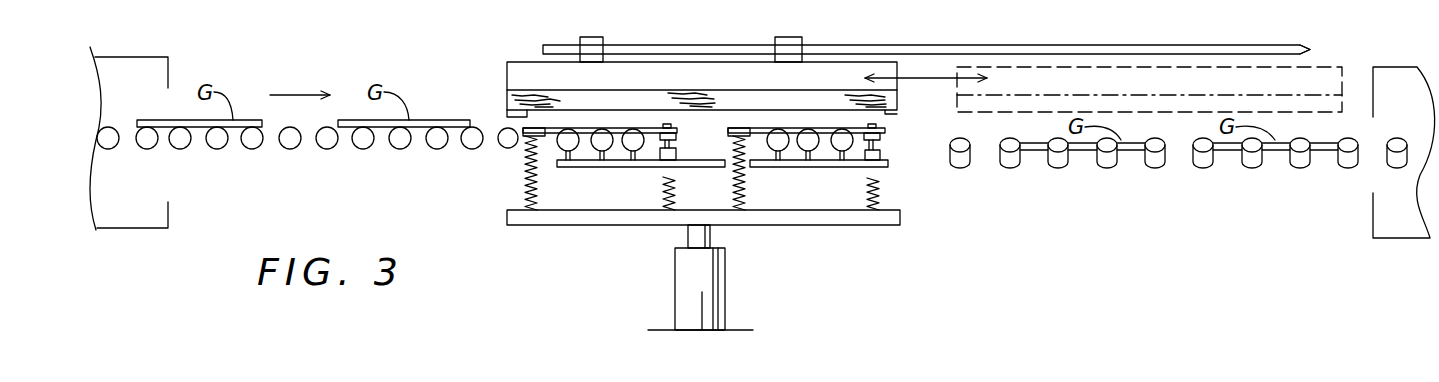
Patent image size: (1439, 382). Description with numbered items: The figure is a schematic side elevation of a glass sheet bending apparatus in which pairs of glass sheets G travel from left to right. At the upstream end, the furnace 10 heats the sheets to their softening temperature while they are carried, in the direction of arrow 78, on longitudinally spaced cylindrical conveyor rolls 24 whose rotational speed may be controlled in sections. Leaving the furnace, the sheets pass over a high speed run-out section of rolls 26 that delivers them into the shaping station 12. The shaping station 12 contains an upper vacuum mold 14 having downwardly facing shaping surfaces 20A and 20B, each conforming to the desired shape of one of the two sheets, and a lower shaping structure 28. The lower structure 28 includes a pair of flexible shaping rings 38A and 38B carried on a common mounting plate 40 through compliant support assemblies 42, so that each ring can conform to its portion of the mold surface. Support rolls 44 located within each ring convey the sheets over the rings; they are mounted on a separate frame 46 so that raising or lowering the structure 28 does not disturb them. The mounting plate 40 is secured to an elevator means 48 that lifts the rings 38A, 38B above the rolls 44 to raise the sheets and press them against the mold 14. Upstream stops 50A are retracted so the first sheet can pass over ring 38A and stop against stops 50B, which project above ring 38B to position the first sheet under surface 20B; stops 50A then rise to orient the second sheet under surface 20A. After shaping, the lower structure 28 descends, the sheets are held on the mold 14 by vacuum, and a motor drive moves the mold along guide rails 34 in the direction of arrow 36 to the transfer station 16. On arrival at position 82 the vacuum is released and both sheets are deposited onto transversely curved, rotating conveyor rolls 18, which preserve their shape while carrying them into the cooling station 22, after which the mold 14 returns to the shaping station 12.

The furnace 10 is at (146, 39).
The shaping station 12 is at (682, 25).
The upper vacuum mold 14 is at (530, 62).
The transfer station 16 is at (1118, 30).
The conveyor rolls 18 is at (1150, 161).
The shaping surface 20A is at (522, 117).
The shaping surface 20B is at (886, 113).
The cooling station 22 is at (1404, 39).
The conveyor rolls 24 is at (146, 149).
The run-out section rolls 26 is at (325, 149).
The lower shaping structure 28 is at (587, 242).
The guide rails 34 is at (838, 45).
The arrow 36 is at (929, 78).
The flexible shaping ring 38A is at (665, 128).
The flexible shaping ring 38B is at (742, 128).
The mounting plate 40 is at (812, 226).
The compliant support assemblies 42 is at (867, 191).
The support rolls 44 is at (627, 151).
The frame 46 is at (598, 168).
The elevator means 48 is at (725, 268).
The upstream stops 50A is at (678, 138).
The stops 50B is at (882, 141).
The arrow 78 is at (298, 95).
The position 82 is at (1318, 67).